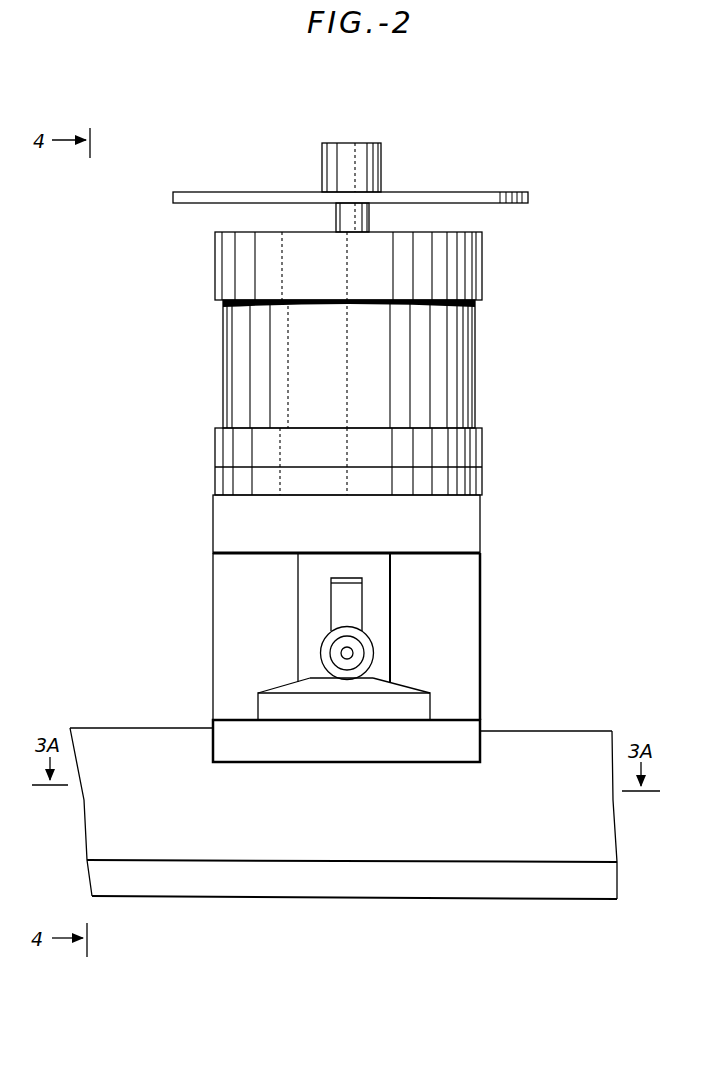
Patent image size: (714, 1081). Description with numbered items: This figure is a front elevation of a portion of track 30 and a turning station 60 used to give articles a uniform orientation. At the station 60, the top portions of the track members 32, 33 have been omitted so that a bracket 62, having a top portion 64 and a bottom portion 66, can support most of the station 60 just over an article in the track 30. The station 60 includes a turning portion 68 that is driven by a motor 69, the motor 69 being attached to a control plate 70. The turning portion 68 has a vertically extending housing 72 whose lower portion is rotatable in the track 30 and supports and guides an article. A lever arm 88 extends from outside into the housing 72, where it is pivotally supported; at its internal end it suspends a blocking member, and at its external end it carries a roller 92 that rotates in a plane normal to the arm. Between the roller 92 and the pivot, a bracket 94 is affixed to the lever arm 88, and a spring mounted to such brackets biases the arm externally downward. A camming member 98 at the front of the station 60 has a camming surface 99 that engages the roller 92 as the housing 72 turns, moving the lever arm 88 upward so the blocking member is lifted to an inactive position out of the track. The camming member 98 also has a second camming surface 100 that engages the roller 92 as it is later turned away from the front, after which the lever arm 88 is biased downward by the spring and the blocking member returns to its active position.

The track 30 is at (554, 725).
The member 32 is at (200, 888).
The member 33 is at (152, 735).
The turning station 60 is at (484, 365).
The bracket 62 is at (211, 621).
The top portion 64 is at (228, 530).
The bottom portion 66 is at (457, 754).
The turning portion 68 is at (397, 601).
The motor 69 is at (223, 354).
The control plate 70 is at (447, 192).
The housing 72 is at (392, 576).
The lever arm 88 is at (333, 652).
The roller 92 is at (366, 641).
The bracket 94 is at (342, 612).
The camming member 98 is at (420, 711).
The camming surface 99 is at (405, 690).
The camming surface 100 is at (285, 690).